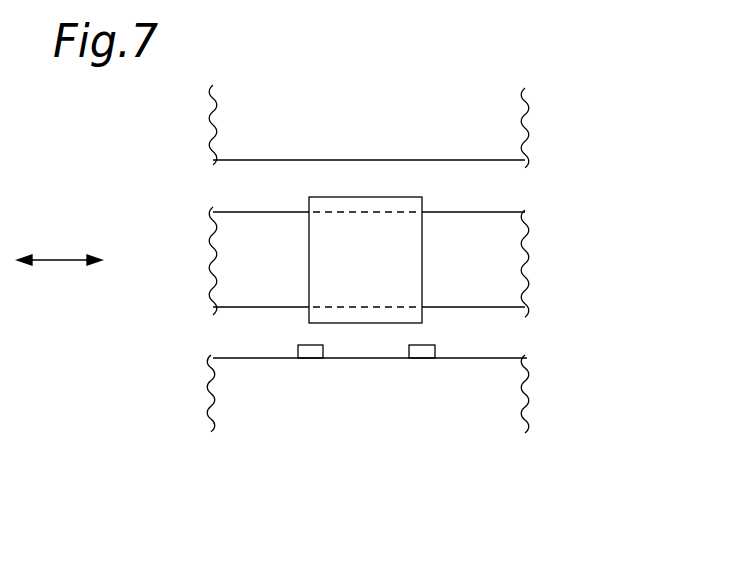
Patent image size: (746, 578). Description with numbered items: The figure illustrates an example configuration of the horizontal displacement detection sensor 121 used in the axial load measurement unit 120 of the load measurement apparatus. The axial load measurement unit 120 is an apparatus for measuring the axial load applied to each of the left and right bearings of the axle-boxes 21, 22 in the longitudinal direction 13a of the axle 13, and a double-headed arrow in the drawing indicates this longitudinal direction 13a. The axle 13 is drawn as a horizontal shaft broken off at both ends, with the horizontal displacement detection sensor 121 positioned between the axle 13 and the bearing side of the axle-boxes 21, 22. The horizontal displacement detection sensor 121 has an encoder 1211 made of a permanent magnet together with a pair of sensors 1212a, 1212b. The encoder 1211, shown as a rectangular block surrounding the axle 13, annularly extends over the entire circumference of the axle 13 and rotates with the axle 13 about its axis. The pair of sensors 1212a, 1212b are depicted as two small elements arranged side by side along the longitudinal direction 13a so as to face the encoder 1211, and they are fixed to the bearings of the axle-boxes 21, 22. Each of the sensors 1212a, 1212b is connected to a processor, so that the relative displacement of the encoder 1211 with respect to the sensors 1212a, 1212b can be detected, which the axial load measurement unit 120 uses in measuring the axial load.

The axle 13 is at (495, 223).
The longitudinal direction 13a is at (52, 261).
The axial load measurement unit 120 is at (615, 216).
The axle-box 21 is at (418, 395).
The axle-box 22 is at (533, 417).
The horizontal displacement detection sensor 121 is at (323, 371).
The encoder 1211 is at (309, 316).
The sensor 1212a is at (312, 357).
The sensor 1212b is at (419, 417).